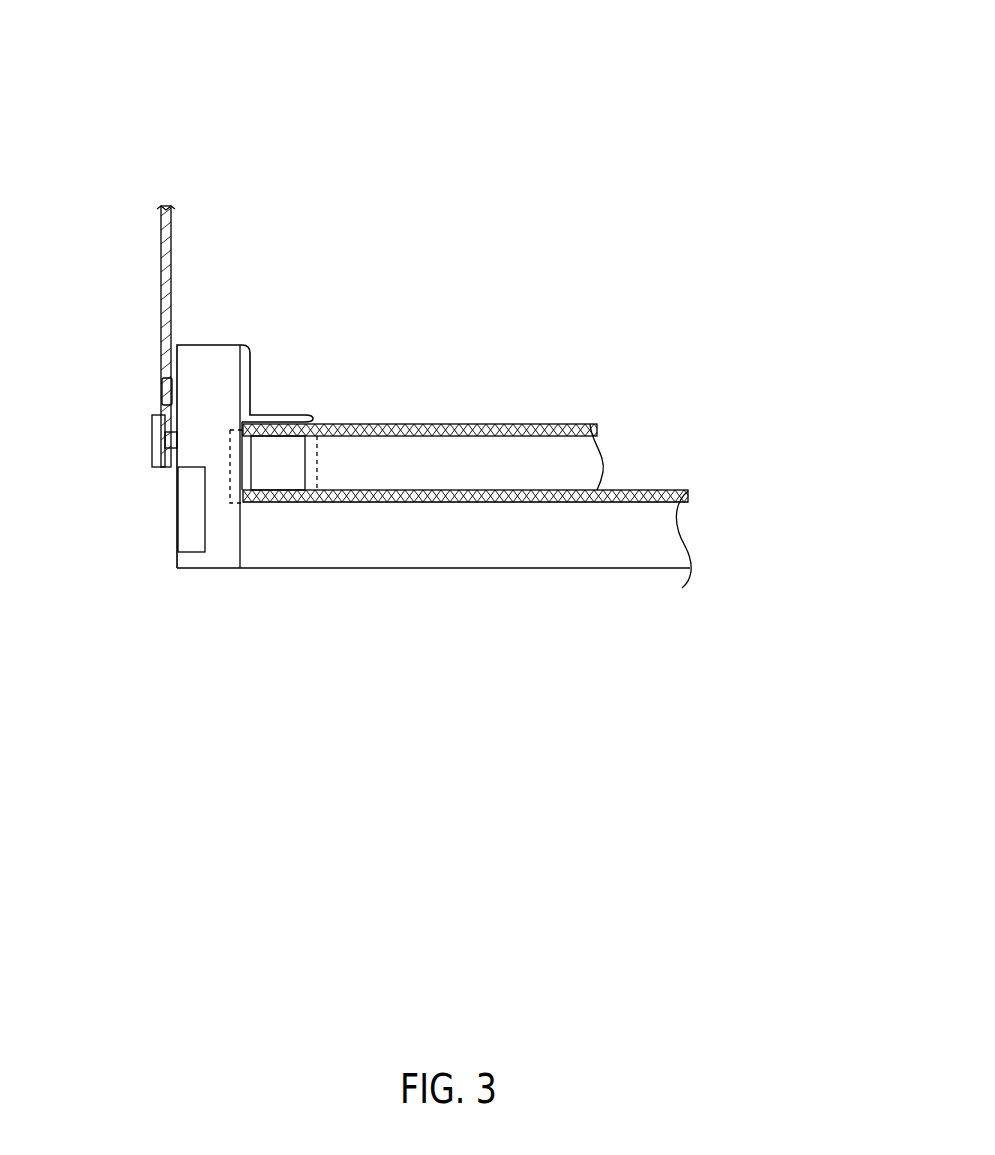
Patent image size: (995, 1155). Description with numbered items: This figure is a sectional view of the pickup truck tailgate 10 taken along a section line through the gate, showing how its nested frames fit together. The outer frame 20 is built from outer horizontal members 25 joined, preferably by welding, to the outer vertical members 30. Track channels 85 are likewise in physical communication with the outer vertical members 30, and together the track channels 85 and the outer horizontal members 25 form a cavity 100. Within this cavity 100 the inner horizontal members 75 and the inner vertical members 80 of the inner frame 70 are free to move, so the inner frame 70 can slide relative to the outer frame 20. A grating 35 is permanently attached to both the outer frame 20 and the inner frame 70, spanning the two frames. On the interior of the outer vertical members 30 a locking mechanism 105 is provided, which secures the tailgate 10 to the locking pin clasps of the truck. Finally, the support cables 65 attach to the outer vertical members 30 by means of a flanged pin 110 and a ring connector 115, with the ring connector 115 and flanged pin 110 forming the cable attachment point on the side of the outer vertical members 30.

The tailgate 10 is at (116, 176).
The outer frame 20 is at (705, 543).
The outer horizontal members 25 is at (390, 528).
The outer vertical members 30 is at (210, 400).
The grating 35 is at (448, 431).
The support cables 65 is at (163, 278).
The inner frame 70 is at (640, 459).
The inner horizontal members 75 is at (375, 468).
The inner vertical members 80 is at (278, 463).
The track channels 85 is at (293, 413).
The cavity 100 is at (320, 463).
The locking mechanism 105 is at (192, 528).
The flanged pin 110 is at (153, 440).
The ring connector 115 is at (165, 403).